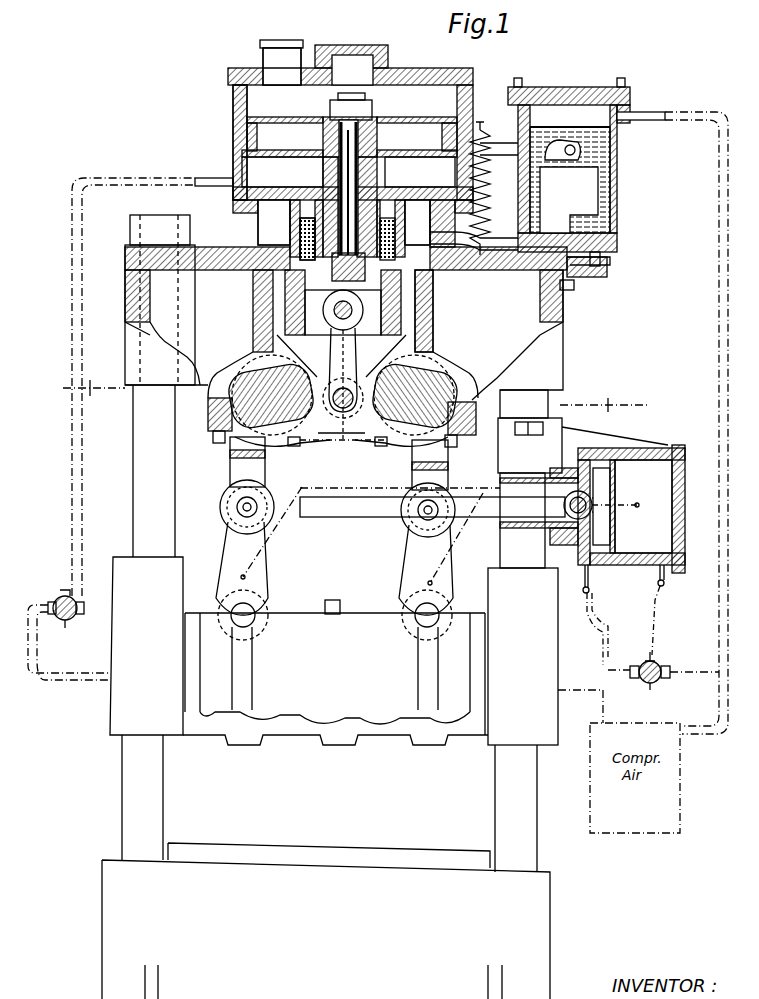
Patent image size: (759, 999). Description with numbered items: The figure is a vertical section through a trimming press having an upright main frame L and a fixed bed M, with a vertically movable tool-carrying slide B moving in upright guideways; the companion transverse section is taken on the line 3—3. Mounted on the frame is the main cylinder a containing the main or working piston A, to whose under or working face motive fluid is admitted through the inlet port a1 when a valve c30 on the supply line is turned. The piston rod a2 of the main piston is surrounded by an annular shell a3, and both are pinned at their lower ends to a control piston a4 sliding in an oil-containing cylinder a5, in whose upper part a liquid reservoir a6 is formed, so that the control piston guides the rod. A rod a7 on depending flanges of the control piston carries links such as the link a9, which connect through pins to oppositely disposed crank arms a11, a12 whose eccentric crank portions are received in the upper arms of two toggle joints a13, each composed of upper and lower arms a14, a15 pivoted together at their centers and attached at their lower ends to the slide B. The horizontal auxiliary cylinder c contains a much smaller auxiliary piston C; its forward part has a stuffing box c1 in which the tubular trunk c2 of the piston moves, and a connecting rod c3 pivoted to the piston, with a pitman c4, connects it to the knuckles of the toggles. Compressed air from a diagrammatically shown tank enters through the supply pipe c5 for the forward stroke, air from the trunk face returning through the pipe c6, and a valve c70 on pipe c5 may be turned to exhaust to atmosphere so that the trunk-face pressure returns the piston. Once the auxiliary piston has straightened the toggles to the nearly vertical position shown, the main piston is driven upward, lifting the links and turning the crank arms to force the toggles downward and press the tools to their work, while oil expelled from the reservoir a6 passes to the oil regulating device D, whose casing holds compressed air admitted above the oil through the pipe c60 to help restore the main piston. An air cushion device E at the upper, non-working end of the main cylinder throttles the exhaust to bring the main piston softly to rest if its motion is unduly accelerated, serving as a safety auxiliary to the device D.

The main piston A is at (410, 120).
The air cushion device E is at (260, 50).
The main cylinder a is at (233, 143).
The inlet port a1 is at (210, 178).
The piston rod a2 is at (338, 178).
The annular shell a3 is at (420, 172).
The control piston a4 is at (262, 304).
The cylinder a5 is at (410, 298).
The liquid reservoir a6 is at (298, 232).
The rod a7 is at (352, 314).
The link a9 is at (351, 384).
The crank arm a11 is at (313, 377).
The crank arm a12 is at (362, 442).
The toggle joint a13 is at (265, 432).
The upper arm a14 is at (228, 440).
The lower arm a15 is at (220, 556).
The slide B is at (334, 651).
The main frame L is at (525, 803).
The fixed bed M is at (326, 921).
The oil regulating device D is at (612, 178).
The auxiliary piston C is at (603, 509).
The auxiliary cylinder c is at (632, 568).
The stuffing box c1 is at (581, 512).
The tubular trunk c2 is at (518, 478).
The connecting rod c3 is at (486, 522).
The pitman c4 is at (322, 516).
The supply pipe c5 is at (664, 610).
The pipe c6 is at (595, 615).
The valve c30 is at (70, 600).
The pipe c60 is at (652, 122).
The valve c70 is at (660, 682).
The section line 3— 3 is at (355, 397).